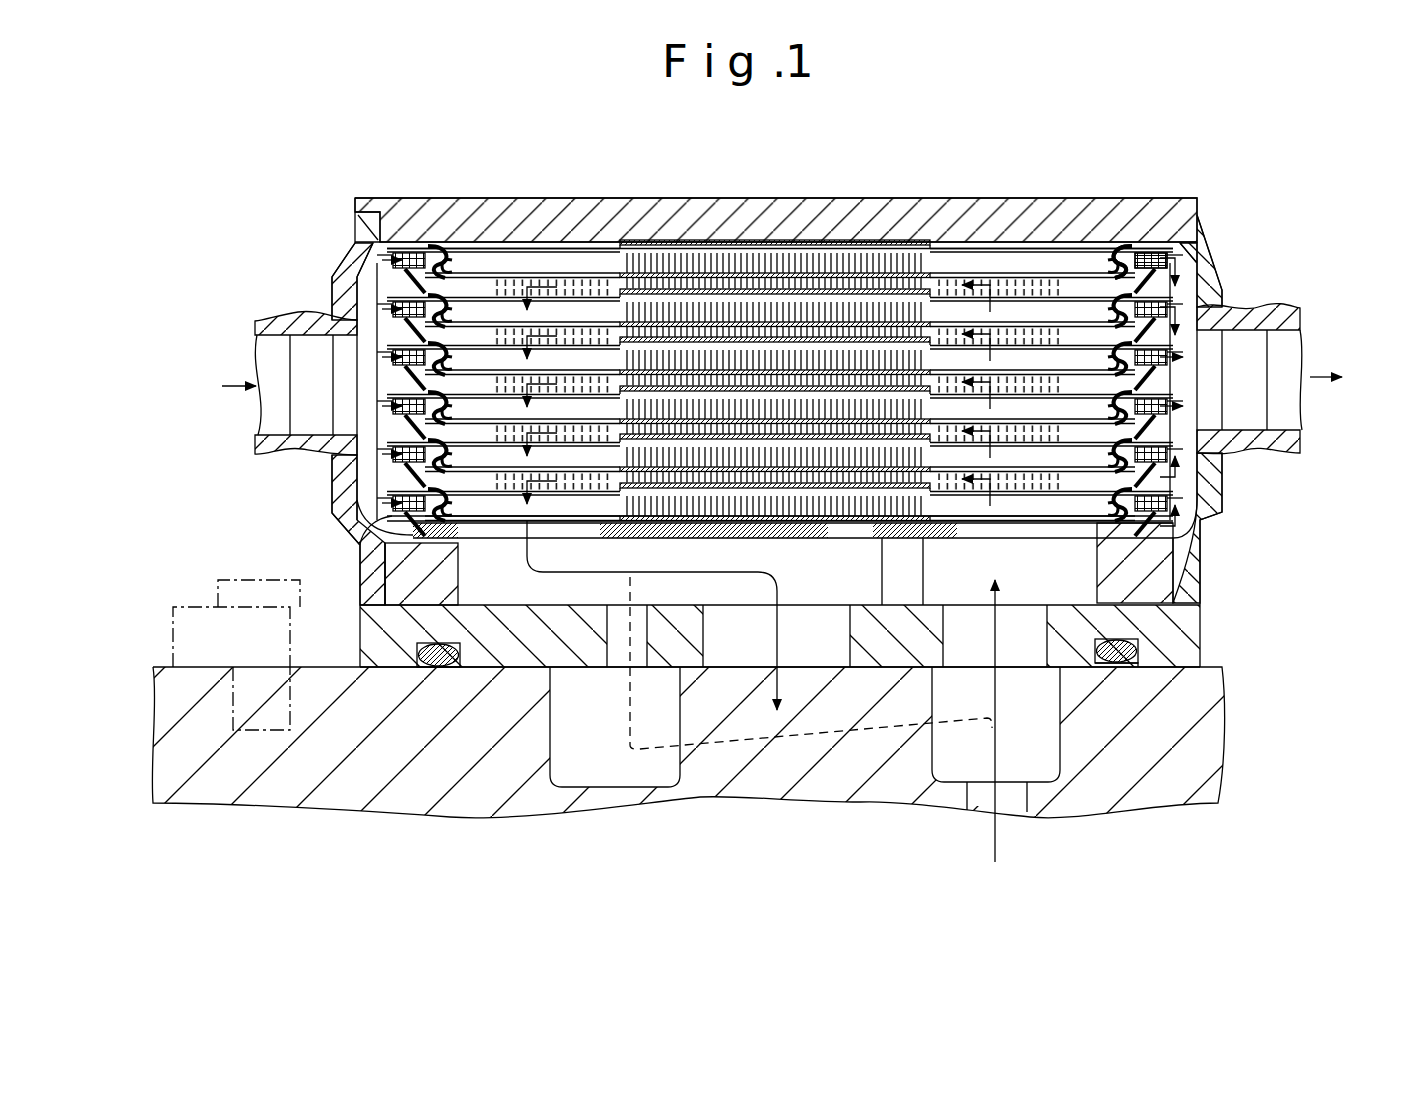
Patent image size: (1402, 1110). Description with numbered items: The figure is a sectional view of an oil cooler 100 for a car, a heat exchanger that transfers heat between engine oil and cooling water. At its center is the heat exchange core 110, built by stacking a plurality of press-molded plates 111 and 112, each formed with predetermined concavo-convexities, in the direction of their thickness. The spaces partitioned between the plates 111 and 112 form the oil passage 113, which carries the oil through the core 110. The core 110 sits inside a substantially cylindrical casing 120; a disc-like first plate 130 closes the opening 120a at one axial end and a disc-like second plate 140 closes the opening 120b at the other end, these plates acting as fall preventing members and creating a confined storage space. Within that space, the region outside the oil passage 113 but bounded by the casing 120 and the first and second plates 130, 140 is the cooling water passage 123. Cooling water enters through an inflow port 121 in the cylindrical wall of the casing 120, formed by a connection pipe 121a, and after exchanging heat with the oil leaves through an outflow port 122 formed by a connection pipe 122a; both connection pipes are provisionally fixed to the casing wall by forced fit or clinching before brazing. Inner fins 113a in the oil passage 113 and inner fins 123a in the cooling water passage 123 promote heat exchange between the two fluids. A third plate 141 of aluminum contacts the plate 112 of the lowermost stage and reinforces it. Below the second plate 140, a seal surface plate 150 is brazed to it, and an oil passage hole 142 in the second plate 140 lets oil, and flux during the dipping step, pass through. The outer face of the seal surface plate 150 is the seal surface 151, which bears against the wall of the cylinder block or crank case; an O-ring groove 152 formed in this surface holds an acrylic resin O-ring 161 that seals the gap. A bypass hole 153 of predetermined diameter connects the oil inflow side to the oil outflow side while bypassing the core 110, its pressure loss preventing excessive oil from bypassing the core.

The oil cooler 100 is at (326, 210).
The heat exchange core 110 is at (487, 315).
The plate 111 is at (1162, 250).
The plate 112 is at (1150, 278).
The oil passage 113 is at (883, 265).
The inner fin 113a is at (785, 265).
The casing 120 is at (1224, 296).
The opening 120a is at (975, 245).
The opening 120b is at (1162, 548).
The inflow port 121 is at (247, 342).
The connection pipe 121a is at (276, 317).
The outflow port 122 is at (1250, 432).
The connection pipe 122a is at (1281, 316).
The cooling water passage 123 is at (386, 526).
The inner fin 123a is at (681, 255).
The first plate 130 is at (1085, 206).
The second plate 140 is at (1152, 586).
The third plate 141 is at (380, 554).
The oil passage hole 142 is at (804, 596).
The seal surface plate 150 is at (1178, 623).
The seal surface 151 is at (1130, 668).
The O-ring groove 152 is at (1140, 653).
The bypass hole 153 is at (627, 580).
The O-ring 161 is at (1057, 668).